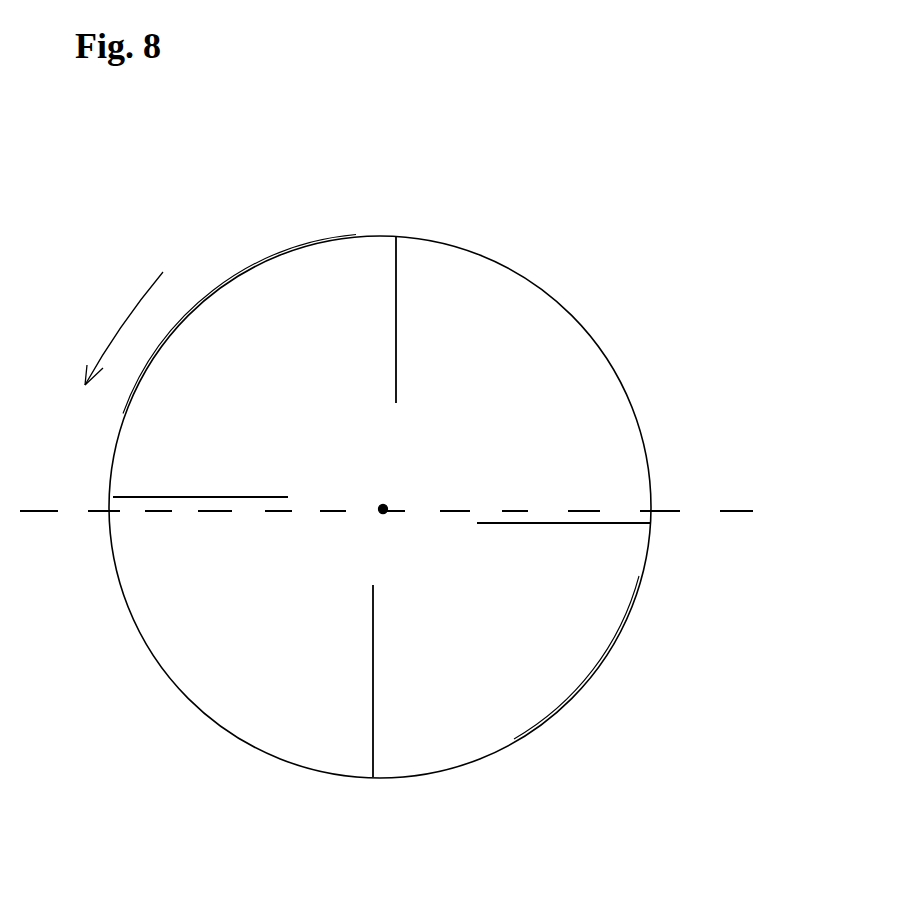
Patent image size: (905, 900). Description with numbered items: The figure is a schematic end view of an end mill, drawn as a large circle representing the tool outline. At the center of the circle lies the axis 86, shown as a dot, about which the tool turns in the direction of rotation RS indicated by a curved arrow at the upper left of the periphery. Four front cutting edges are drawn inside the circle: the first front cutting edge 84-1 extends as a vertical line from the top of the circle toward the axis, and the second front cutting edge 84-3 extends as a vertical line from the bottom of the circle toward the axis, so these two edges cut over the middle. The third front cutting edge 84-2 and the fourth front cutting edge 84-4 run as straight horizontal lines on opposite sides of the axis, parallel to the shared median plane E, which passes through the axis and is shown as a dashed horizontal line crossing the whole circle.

The first front cutting edge 84-1 is at (396, 318).
The third front cutting edge 84-2 is at (165, 497).
The second front cutting edge 84-3 is at (373, 682).
The fourth front cutting edge 84-4 is at (537, 525).
The axis 86 is at (386, 505).
The median plane E is at (735, 507).
The direction of rotation RS is at (118, 320).